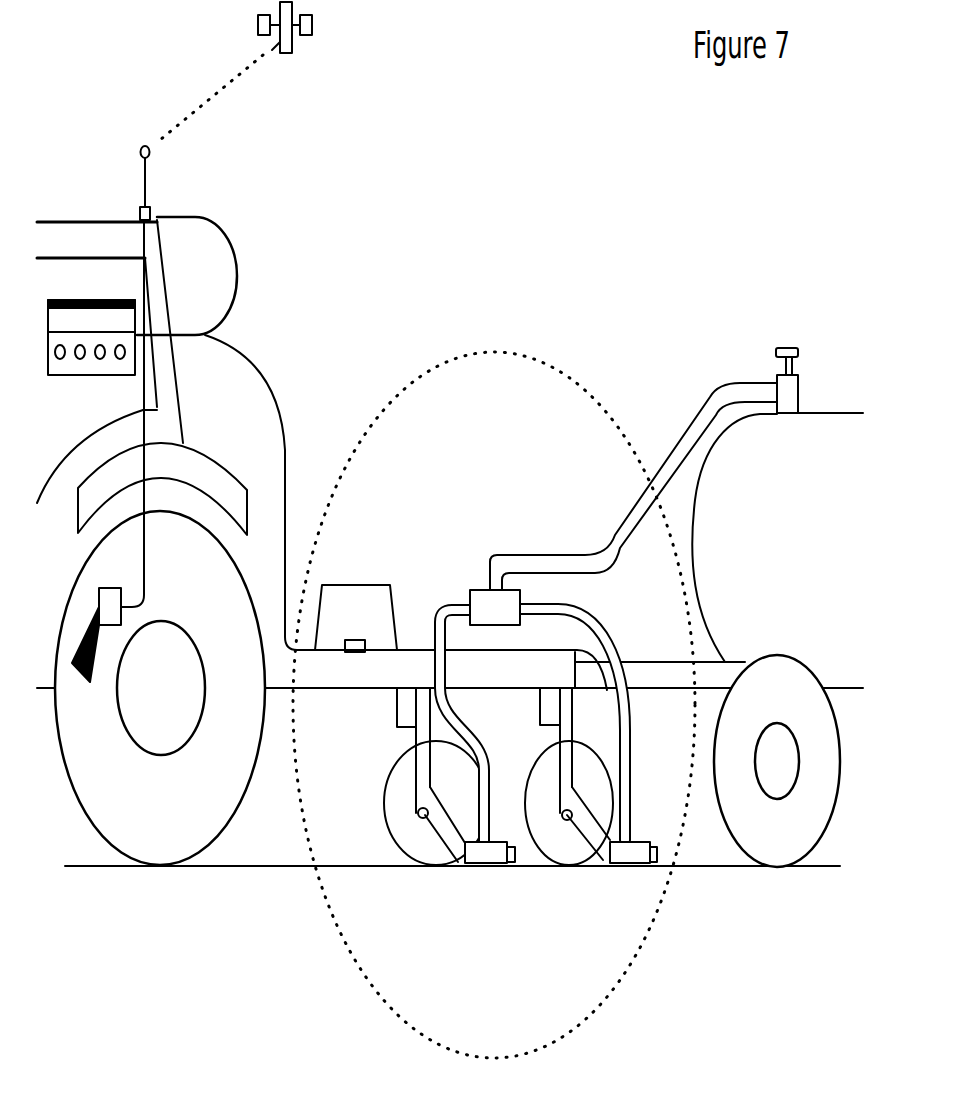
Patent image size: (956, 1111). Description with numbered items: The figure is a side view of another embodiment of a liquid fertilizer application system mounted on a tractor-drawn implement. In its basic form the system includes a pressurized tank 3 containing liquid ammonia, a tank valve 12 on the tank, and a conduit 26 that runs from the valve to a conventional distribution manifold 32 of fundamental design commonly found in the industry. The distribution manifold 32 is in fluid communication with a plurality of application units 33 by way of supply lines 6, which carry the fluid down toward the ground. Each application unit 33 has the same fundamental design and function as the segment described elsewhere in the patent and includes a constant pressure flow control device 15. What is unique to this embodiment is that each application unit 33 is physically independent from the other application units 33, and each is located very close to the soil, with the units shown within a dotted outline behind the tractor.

The pressurized tank 3 is at (830, 412).
The supply lines 6 is at (608, 643).
The tank valve 12 is at (788, 348).
The constant pressure flow control device 15 is at (513, 865).
The conduit 26 is at (548, 553).
The distribution manifold 32 is at (470, 590).
The application units 33 is at (411, 390).